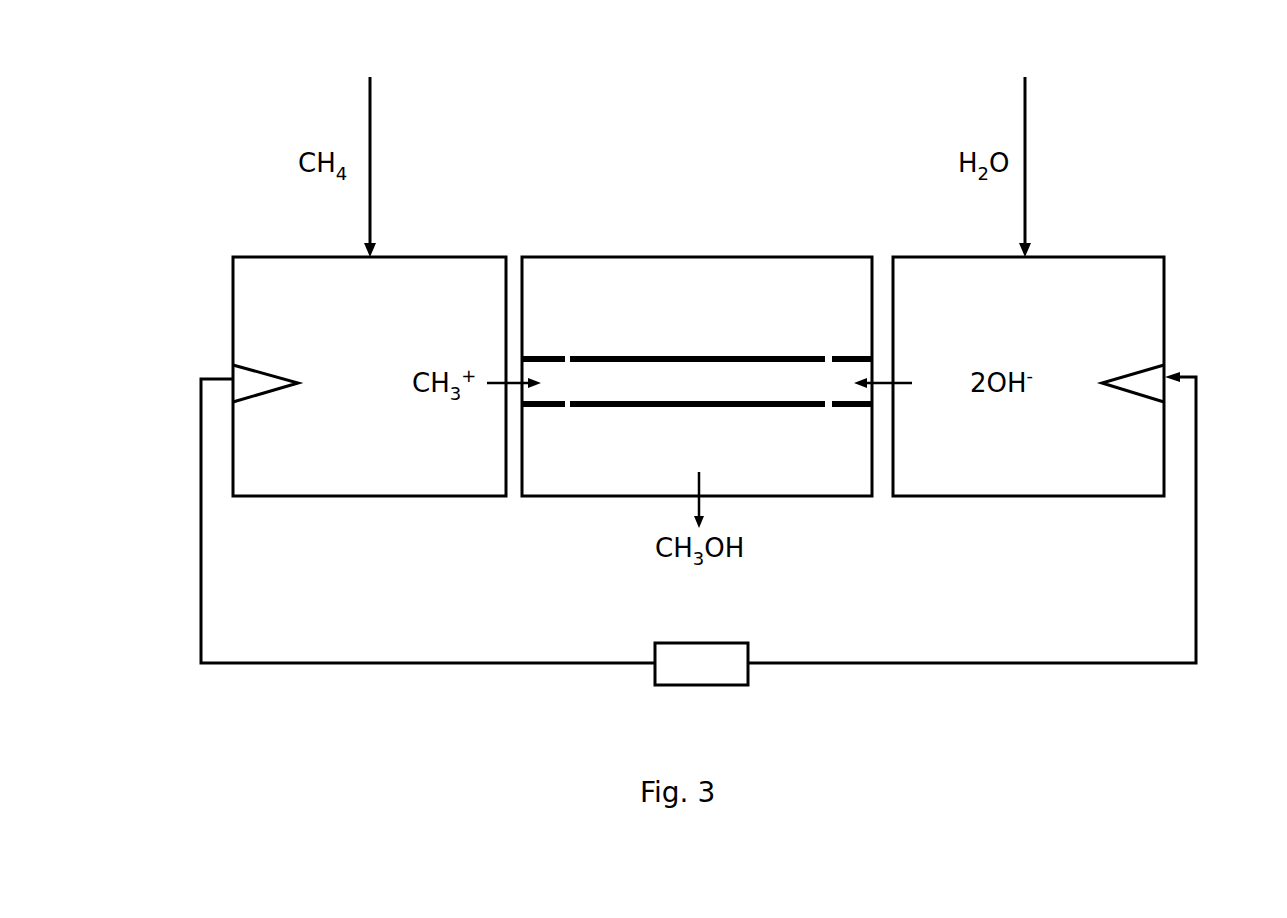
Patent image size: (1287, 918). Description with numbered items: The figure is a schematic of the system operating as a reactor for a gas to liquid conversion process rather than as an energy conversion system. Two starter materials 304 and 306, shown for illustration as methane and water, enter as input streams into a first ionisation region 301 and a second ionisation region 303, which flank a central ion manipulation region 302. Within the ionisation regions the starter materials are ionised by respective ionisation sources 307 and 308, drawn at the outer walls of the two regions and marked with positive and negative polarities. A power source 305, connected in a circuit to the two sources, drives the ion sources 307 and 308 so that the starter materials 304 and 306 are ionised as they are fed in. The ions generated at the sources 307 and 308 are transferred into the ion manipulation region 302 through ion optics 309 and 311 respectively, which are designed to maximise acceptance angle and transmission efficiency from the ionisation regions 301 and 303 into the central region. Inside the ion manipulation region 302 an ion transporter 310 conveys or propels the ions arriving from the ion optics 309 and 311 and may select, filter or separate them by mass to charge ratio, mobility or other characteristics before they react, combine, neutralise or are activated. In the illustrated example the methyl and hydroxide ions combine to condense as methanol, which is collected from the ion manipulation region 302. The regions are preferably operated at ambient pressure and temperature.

The ionisation region 301 is at (369, 376).
The ion manipulation region 302 is at (697, 376).
The ionisation region 303 is at (1028, 376).
The starter material 304 is at (369, 146).
The power source 305 is at (701, 692).
The starter material 306 is at (1023, 146).
The ionisation source 307 is at (395, 514).
The ionisation source 308 is at (1007, 514).
The ion optics 309 is at (550, 409).
The ion transporter 310 is at (697, 381).
The ion optics 311 is at (841, 409).